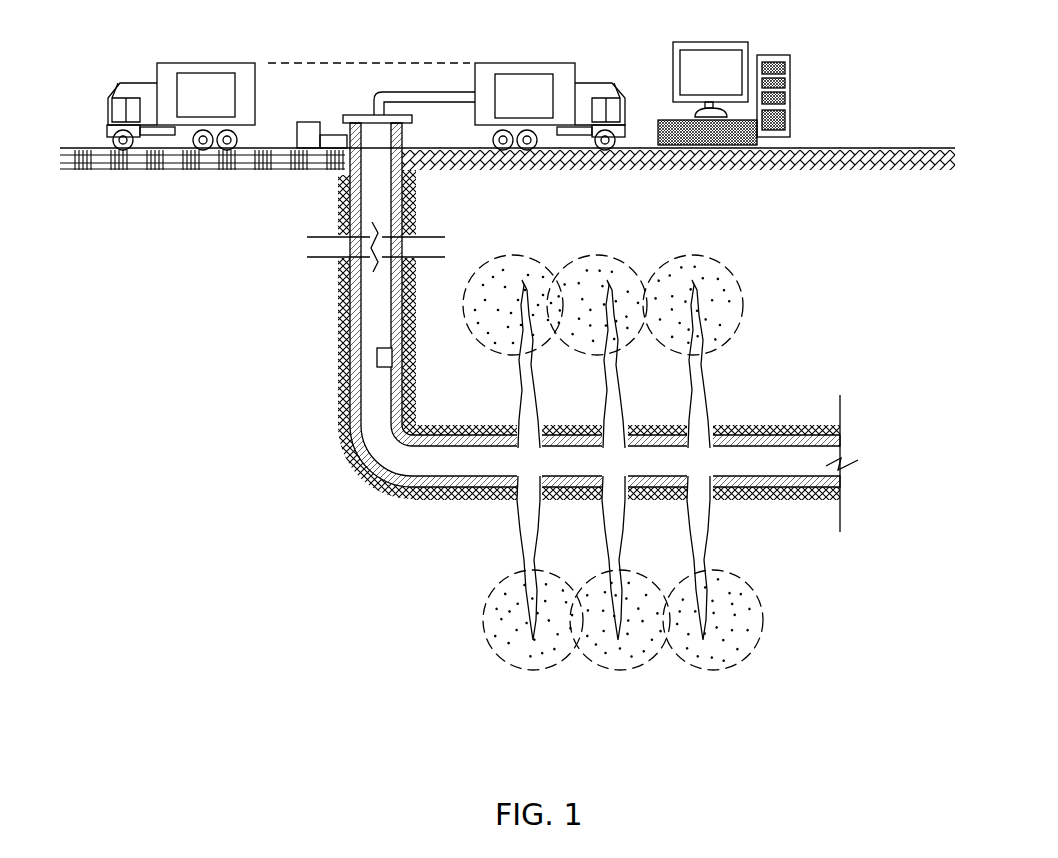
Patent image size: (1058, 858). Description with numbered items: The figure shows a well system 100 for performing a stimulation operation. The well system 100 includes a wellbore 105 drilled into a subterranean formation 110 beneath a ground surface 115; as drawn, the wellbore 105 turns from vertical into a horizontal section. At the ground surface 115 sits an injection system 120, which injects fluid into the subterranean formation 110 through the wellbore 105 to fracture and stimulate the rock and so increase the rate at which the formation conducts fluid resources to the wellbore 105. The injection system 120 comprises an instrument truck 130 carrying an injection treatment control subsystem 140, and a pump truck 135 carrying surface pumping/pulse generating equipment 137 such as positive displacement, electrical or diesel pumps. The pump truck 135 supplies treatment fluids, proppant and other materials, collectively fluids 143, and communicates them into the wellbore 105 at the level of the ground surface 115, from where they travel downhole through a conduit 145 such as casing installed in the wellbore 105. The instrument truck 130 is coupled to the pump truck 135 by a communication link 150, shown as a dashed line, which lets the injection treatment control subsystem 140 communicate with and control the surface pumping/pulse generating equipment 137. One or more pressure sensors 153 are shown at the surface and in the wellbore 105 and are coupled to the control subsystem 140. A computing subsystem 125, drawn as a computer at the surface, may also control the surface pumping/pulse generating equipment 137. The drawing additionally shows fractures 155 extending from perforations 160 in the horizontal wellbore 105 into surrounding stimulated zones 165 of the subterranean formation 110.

The well system 100 is at (258, 590).
The wellbore 105 is at (542, 338).
The subterranean formation 110 is at (748, 242).
The ground surface 115 is at (850, 148).
The injection system 120 is at (416, 75).
The computing subsystem 125 is at (713, 42).
The instrument truck 130 is at (181, 76).
The pump truck 135 is at (550, 76).
The surface pumping/pulse generating equipment 137 is at (541, 107).
The injection treatment control subsystem 140 is at (223, 107).
The fluids 143 is at (435, 92).
The conduit 145 is at (357, 300).
The communication link 150 is at (345, 63).
The pressure sensor 153 is at (300, 120).
The fracture 155 is at (700, 530).
The perforation 160 is at (695, 495).
The stimulated zone 165 is at (527, 255).